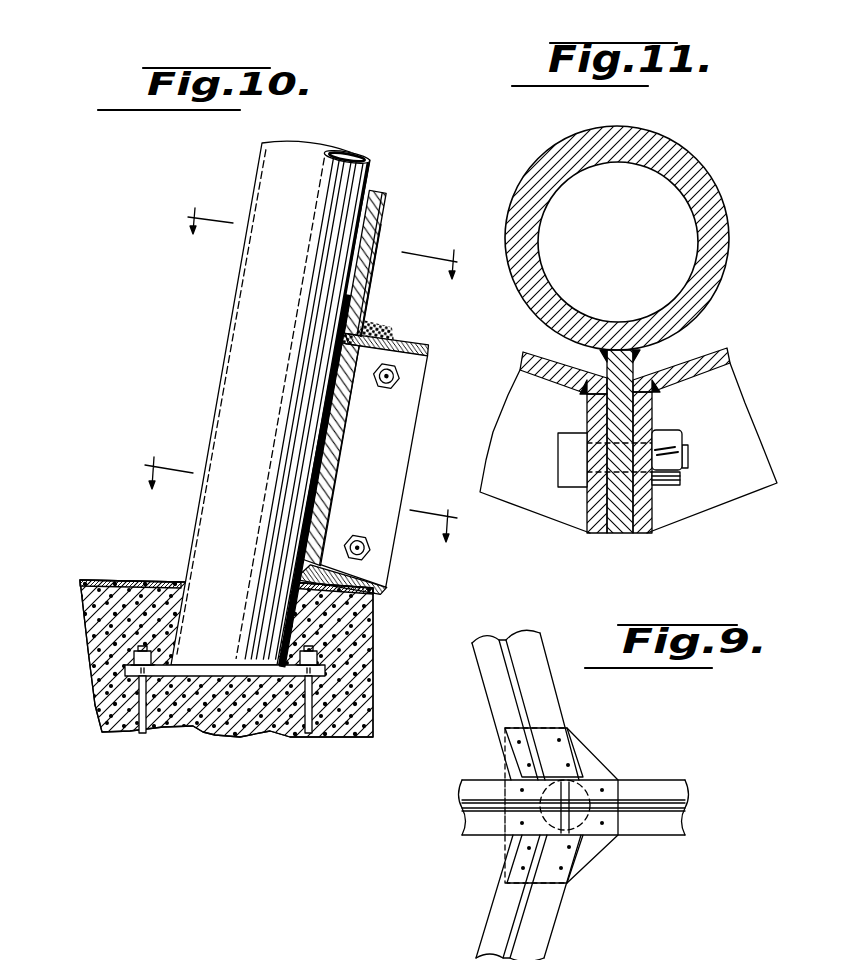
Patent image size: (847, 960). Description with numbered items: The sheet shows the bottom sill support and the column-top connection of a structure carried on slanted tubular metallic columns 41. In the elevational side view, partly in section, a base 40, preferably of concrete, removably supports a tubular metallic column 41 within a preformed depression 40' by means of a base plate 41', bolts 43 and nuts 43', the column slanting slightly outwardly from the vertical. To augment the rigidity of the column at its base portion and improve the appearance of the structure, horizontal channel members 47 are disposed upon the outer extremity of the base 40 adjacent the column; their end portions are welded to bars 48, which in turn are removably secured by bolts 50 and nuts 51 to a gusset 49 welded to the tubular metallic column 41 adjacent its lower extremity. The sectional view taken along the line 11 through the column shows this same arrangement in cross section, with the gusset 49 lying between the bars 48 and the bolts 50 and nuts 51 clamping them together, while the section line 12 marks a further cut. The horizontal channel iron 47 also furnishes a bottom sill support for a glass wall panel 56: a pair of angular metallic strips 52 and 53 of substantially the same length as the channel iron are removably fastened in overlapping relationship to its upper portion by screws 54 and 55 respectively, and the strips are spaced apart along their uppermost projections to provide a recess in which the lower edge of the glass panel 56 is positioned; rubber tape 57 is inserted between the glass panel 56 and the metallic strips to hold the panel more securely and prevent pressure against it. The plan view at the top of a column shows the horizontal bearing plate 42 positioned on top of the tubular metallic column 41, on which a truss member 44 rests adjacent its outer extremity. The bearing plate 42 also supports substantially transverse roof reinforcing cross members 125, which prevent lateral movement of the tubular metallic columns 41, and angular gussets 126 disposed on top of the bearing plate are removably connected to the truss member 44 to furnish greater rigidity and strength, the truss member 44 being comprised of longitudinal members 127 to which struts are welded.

In FIG. 10, the base 40 is at (254, 658).
In FIG. 10, the preformed depressions 40' is at (226, 571).
In FIG. 10, the tubular metallic columns 41 is at (271, 406).
In FIG. 11, the tubular metallic columns 41 is at (617, 238).
In FIG. 10, the base plate 41' is at (214, 710).
In FIG. 10, the bolts 43 is at (210, 705).
In FIG. 10, the nuts 43' is at (233, 668).
In FIG. 10, the horizontal channel members 47 is at (413, 338).
In FIG. 11, the horizontal channel members 47 is at (562, 386).
In FIG. 10, the bars 48 is at (413, 448).
In FIG. 11, the bars 48 is at (587, 505).
In FIG. 10, the gusset 49 is at (323, 457).
In FIG. 11, the gusset 49 is at (632, 356).
In FIG. 10, the bolts 50 is at (398, 372).
In FIG. 11, the bolts 50 is at (688, 460).
In FIG. 10, the nuts 51 is at (390, 390).
In FIG. 11, the nuts 51 is at (667, 432).
In FIG. 10, the angular metallic strip 52 is at (350, 300).
In FIG. 10, the angular metallic strip 53 is at (371, 303).
In FIG. 10, the screw 54 is at (338, 337).
In FIG. 10, the screw 55 is at (379, 328).
In FIG. 10, the glass wall panel 56 is at (378, 191).
In FIG. 10, the rubber tape 57 is at (343, 314).
In FIG. 10, the section line 11— 11 is at (298, 509).
In FIG. 10, the section line 12- 12 is at (322, 256).
In FIG. 9, the horizontal bearing plate 42 is at (598, 857).
In FIG. 9, the truss member 44 is at (458, 822).
In FIG. 9, the roof reinforcing cross members 125 is at (538, 633).
In FIG. 9, the angular gussets 126 is at (577, 793).
In FIG. 9, the longitudinal members 127 is at (690, 810).